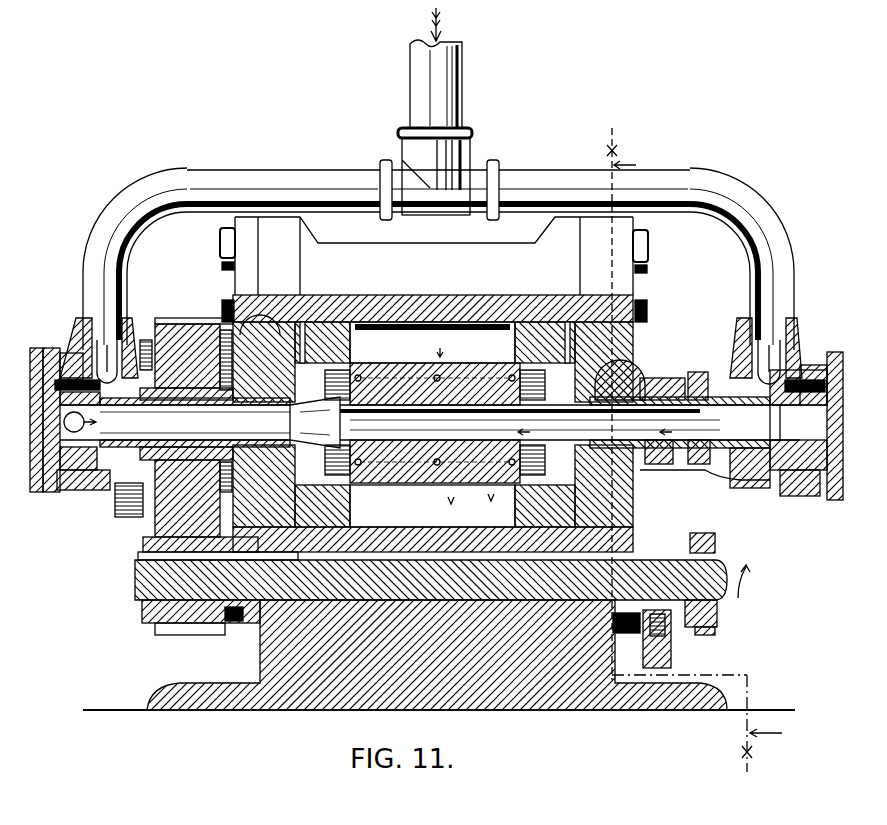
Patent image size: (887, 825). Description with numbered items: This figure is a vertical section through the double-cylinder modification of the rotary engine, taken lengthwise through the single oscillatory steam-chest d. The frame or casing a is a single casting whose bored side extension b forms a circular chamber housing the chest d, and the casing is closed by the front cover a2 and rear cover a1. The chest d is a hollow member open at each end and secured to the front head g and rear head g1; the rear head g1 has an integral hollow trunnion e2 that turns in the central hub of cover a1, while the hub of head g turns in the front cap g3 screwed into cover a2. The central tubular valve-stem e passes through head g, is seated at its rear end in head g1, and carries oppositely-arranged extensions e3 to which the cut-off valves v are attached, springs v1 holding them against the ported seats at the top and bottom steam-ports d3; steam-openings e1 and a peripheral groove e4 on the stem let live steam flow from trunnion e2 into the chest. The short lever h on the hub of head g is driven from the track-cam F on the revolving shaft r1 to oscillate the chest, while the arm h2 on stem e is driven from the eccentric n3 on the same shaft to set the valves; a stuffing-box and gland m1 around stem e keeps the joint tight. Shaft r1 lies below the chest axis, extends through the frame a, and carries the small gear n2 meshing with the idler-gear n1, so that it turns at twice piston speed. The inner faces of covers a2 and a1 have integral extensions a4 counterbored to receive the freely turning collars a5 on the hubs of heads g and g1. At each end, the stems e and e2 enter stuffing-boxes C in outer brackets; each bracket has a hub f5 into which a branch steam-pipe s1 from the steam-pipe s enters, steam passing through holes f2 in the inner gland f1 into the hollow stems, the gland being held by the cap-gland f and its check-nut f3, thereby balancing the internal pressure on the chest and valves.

The steam-pipe s is at (418, 78).
The branch steam-pipe s1 is at (320, 172).
The frame or casing a is at (350, 245).
The rear head or cover a1 is at (244, 263).
The front head or cover a2 is at (625, 268).
The head extensions a4 is at (286, 330).
The collars a5 is at (222, 312).
The side wings or extensions b is at (392, 300).
The steam-chest or abutment d is at (334, 330).
The steam-ports d3 is at (432, 424).
The tubular valve-stem or shaft e is at (722, 402).
The steam-openings e1 is at (472, 398).
The hollow stem or trunnion e2 is at (175, 422).
The extensions e3 is at (494, 390).
The peripheral groove e4 is at (317, 413).
The cap-gland f is at (436, 436).
The inner gland member f1 is at (814, 372).
The holes f2 is at (768, 490).
The check-nut f3 is at (800, 496).
The nozzle or hub f5 is at (80, 338).
The front head g is at (568, 330).
The rear head g1 is at (302, 330).
The front cap g3 is at (648, 376).
The arm or lever h is at (660, 470).
The short arm h2 is at (694, 376).
The stuffing-box and gland m1 is at (690, 470).
The idler-gear n1 is at (162, 320).
The small gear n2 is at (170, 630).
The eccentric n3 is at (720, 611).
The revolving shaft r1 is at (142, 572).
The cut-off valves v is at (443, 418).
The springs v1 is at (490, 493).
The stuffing-box C is at (435, 433).
The track-cam F is at (672, 642).